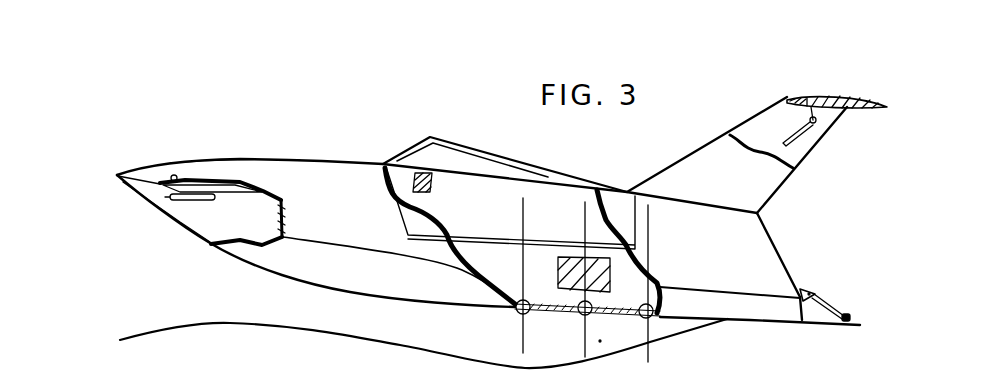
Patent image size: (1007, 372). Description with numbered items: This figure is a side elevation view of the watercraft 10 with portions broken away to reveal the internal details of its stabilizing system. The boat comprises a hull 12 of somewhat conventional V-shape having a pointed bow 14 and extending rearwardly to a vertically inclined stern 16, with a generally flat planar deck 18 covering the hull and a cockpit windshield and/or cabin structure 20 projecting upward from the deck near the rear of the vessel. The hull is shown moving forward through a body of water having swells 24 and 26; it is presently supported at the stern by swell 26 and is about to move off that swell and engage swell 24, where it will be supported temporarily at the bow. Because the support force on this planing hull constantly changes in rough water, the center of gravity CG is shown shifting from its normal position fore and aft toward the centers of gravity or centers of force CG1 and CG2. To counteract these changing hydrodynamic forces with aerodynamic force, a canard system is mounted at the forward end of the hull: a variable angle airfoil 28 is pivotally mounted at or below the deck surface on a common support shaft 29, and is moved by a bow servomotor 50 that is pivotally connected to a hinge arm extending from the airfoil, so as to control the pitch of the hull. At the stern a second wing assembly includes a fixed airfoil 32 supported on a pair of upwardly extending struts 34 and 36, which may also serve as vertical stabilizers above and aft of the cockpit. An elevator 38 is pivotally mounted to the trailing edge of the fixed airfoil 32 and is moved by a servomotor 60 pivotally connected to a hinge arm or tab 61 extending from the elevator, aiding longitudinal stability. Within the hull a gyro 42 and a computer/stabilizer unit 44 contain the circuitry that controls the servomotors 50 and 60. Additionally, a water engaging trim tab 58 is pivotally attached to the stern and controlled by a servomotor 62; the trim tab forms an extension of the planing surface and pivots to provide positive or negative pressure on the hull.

The aircraft 10 is at (397, 95).
The hull 12 is at (347, 263).
The pointed bow 14 is at (118, 172).
The vertically inclined stern 16 is at (773, 237).
The deck 18 is at (300, 160).
The cockpit windshield and/or cabin structure 20 is at (453, 142).
The swell 24 is at (190, 340).
The swell 26 is at (870, 292).
The variable angle airfoil 28 is at (195, 177).
The support shaft 29 is at (175, 175).
The fixed airfoil 32 is at (797, 98).
The strut 34 is at (700, 157).
The strut 36 is at (760, 122).
The elevator 38 is at (832, 93).
The gyro 42 is at (558, 263).
The computer/stabilizer unit 44 is at (431, 178).
The bow servomotor 50 is at (207, 203).
The trim tab 58 is at (827, 325).
The servomotor 60 is at (797, 138).
The hinge arm or tab 61 is at (820, 115).
The servomotor 62 is at (830, 297).
The center of gravity or center of force CG1 is at (503, 275).
The center of gravity CG is at (566, 279).
The center of gravity or center of force CG2 is at (626, 283).